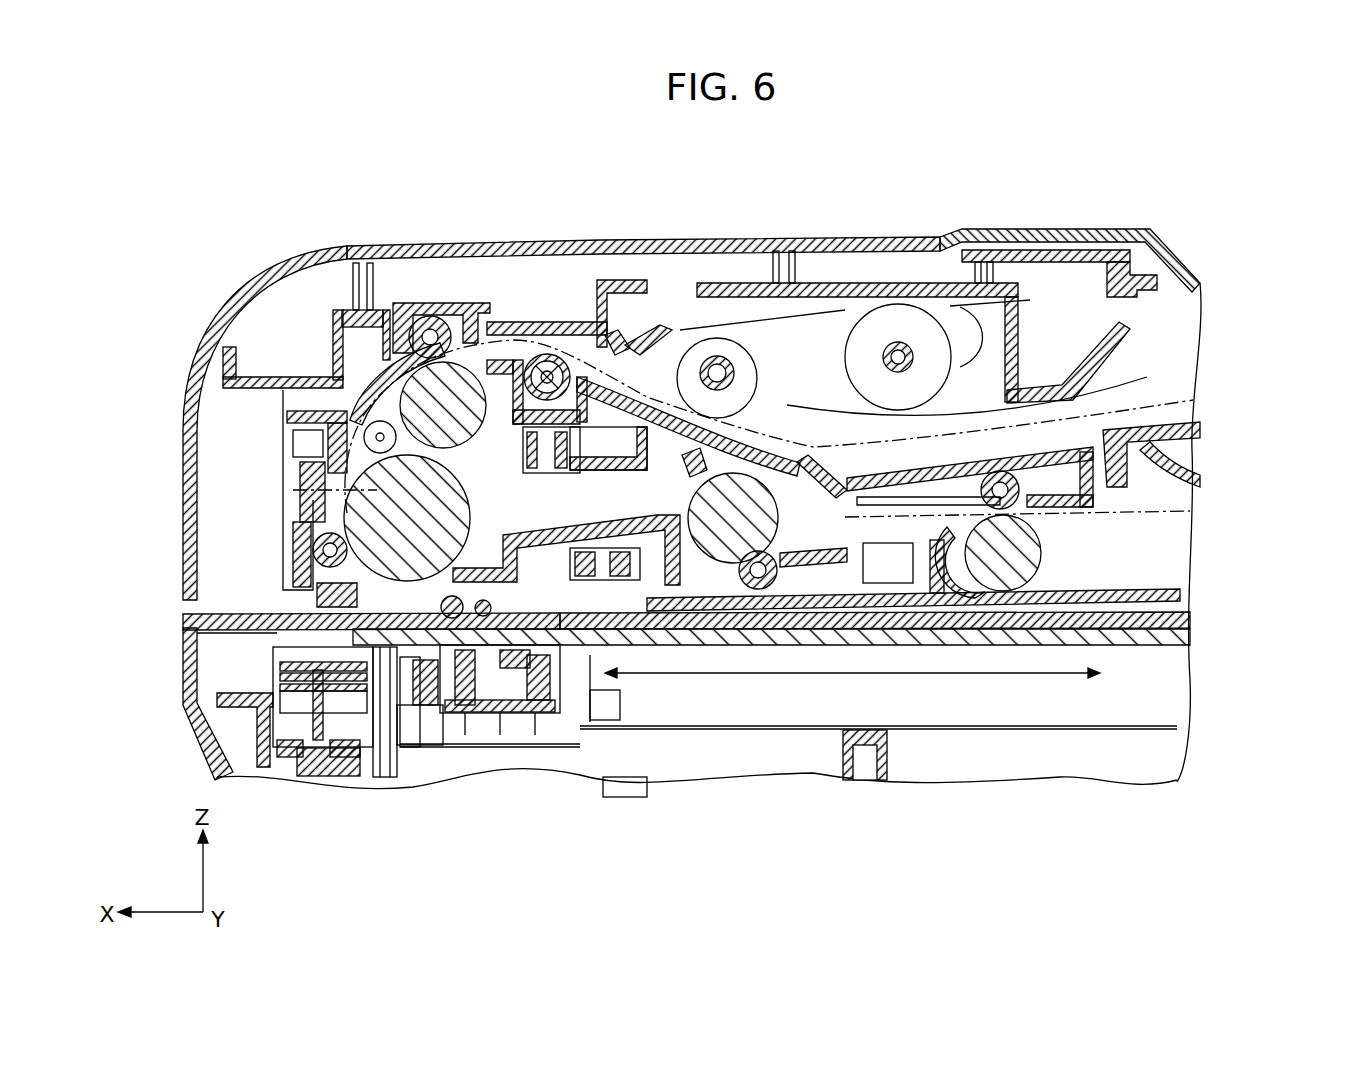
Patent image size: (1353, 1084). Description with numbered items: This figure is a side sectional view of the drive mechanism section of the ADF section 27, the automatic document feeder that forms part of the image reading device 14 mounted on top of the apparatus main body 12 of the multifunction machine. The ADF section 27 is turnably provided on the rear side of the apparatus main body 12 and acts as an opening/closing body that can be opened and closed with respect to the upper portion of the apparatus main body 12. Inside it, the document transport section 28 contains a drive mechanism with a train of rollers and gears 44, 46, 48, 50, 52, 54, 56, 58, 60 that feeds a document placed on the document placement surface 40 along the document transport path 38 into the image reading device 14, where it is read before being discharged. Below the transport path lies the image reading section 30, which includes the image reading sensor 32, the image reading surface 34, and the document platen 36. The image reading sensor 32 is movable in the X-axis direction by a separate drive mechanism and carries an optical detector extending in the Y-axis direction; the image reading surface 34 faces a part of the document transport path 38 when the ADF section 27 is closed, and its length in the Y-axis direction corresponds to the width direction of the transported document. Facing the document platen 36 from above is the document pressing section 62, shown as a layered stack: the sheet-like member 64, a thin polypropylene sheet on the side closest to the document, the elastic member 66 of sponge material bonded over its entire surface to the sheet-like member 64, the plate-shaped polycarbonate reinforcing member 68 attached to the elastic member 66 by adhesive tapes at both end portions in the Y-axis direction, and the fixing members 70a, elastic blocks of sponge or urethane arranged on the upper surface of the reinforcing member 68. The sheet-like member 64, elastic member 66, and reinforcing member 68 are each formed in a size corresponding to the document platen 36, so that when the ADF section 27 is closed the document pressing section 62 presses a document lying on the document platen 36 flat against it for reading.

The apparatus main body 12 is at (188, 688).
The image reading device 14 is at (1030, 217).
The ADF section 27 is at (730, 242).
The document transport section 28 is at (977, 388).
The image reading section 30 is at (725, 763).
The image reading sensor 32 is at (510, 720).
The image reading surface 34 is at (485, 713).
The document platen 36 is at (465, 841).
The document transport path 38 is at (1182, 268).
The document placement surface 40 is at (1190, 404).
The support frame 44 is at (383, 250).
The transport roller 46 is at (883, 318).
The gear 48 is at (698, 387).
The gear 50 is at (555, 347).
The roller 52 is at (465, 373).
The roller 54 is at (380, 390).
The bracket 56 is at (310, 490).
The roller 58 is at (775, 515).
The driven roller 60 is at (1022, 492).
The document pressing section 62 is at (830, 601).
The sheet-like member 64 is at (805, 649).
The elastic member 66 is at (1167, 623).
The reinforcing member 68 is at (1158, 590).
The fixing member 70a is at (1013, 557).